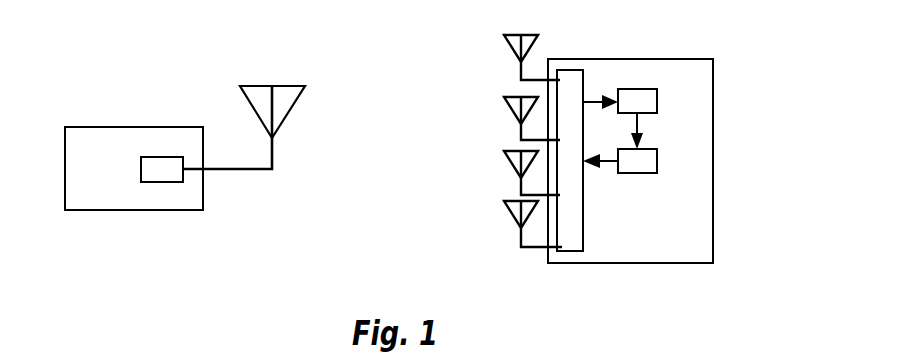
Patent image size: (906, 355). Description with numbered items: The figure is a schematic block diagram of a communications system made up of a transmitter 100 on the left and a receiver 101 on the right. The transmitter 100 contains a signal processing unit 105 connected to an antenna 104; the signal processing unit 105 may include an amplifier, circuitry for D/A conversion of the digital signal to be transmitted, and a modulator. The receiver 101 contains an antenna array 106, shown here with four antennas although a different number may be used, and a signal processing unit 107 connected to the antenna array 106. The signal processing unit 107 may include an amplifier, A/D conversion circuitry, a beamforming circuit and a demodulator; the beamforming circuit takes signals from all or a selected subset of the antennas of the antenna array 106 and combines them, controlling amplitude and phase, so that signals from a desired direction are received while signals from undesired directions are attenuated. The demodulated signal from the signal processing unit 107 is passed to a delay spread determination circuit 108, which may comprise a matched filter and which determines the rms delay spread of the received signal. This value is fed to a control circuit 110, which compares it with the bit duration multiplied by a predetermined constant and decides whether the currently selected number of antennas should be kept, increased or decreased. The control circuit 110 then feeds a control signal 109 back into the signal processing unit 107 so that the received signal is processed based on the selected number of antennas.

The transmitter 100 is at (124, 137).
The antenna 104 is at (227, 96).
The signal processing unit 105 is at (122, 209).
The receiver 101 is at (637, 133).
The antenna array 106 is at (474, 141).
The signal processing unit 107 is at (616, 188).
The delay spread determination circuit 108 is at (693, 98).
The control signal 109 is at (629, 184).
The control circuit 110 is at (711, 137).